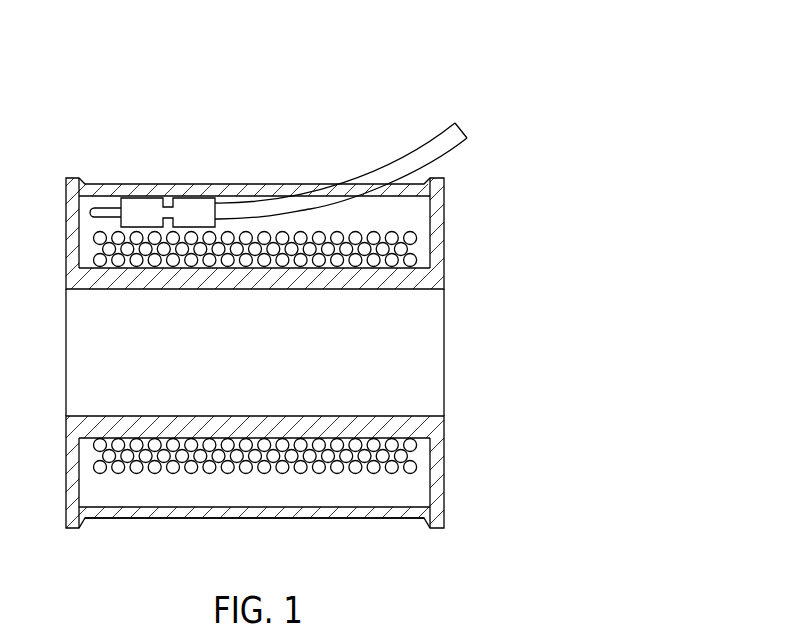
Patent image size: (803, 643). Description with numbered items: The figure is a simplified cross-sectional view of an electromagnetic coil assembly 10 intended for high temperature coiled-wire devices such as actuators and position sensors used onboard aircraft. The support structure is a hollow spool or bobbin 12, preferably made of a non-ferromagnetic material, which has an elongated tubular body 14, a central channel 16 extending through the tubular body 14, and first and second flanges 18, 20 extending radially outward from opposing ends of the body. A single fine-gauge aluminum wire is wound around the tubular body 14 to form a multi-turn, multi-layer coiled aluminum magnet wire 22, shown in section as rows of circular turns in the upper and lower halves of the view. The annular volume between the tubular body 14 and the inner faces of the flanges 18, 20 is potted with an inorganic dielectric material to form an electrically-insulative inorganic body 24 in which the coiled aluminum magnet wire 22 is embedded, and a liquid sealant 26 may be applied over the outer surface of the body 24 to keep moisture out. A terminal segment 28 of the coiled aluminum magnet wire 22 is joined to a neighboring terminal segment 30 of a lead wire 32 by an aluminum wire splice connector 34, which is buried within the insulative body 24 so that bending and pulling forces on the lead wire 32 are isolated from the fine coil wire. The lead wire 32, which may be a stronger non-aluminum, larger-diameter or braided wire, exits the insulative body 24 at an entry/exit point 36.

The electromagnetic coil assembly 10 is at (307, 292).
The bobbin 12 is at (262, 343).
The tubular body 14 is at (353, 283).
The central channel 16 is at (270, 363).
The first flange 18 is at (73, 482).
The second flange 20 is at (435, 255).
The coiled aluminum magnet wire 22 is at (122, 262).
The electrically-insulative inorganic body 24 is at (425, 216).
The liquid sealant 26 is at (286, 190).
The terminal segment 28 is at (108, 207).
The terminal segment of lead wire 30 is at (243, 211).
The lead wire 32 is at (339, 169).
The aluminum wire splice connector 34 is at (197, 197).
The entry/exit point 36 is at (343, 185).